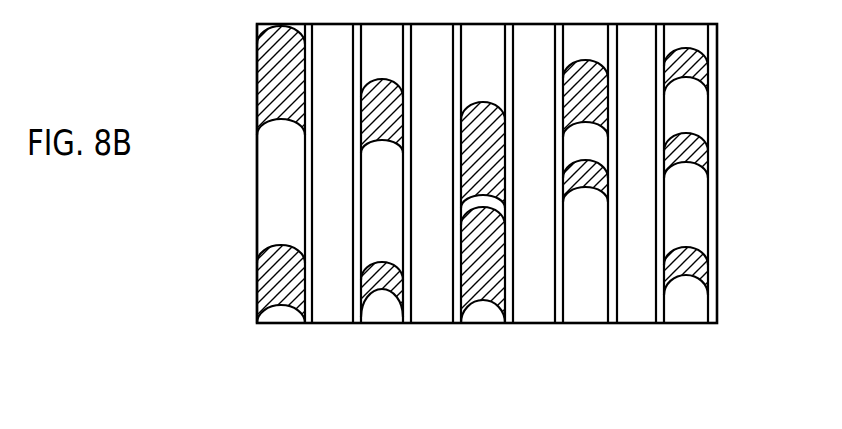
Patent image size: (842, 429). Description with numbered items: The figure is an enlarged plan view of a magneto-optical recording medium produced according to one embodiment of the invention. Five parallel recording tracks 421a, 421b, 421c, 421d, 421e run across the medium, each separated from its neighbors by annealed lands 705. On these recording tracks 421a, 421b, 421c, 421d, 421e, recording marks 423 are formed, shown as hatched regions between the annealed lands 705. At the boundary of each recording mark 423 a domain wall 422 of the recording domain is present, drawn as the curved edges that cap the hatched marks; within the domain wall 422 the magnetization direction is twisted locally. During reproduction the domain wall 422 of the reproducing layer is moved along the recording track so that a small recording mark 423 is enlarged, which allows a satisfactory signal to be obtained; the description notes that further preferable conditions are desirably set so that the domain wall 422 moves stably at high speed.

The recording track 421a is at (283, 323).
The recording track 421b is at (383, 323).
The recording track 421c is at (487, 323).
The recording track 421d is at (587, 323).
The recording track 421e is at (685, 323).
The annealed land 705 is at (338, 323).
The domain wall 422 is at (258, 30).
The recording mark 423 is at (259, 80).